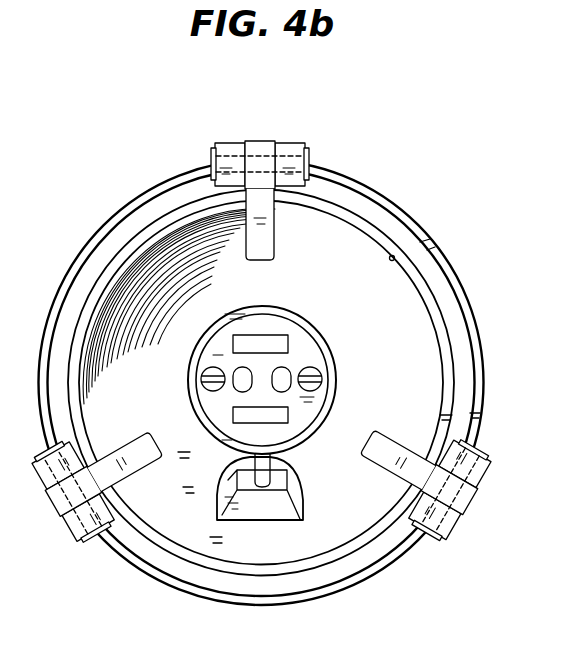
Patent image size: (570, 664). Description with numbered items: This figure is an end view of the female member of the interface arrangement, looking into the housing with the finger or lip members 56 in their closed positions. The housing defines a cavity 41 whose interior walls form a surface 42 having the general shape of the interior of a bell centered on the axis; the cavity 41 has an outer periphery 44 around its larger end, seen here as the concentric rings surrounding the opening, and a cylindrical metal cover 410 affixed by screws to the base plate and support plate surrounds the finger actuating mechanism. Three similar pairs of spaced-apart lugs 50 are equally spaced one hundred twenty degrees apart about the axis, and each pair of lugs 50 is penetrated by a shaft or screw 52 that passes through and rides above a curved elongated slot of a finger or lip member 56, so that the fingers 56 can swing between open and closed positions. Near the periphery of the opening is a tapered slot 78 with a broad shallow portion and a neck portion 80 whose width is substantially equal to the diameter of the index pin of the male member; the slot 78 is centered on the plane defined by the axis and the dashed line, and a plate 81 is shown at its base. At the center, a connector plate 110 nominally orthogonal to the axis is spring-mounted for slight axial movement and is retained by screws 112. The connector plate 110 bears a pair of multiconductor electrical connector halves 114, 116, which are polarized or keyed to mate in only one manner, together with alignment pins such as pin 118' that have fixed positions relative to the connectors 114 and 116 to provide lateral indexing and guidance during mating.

The cavity 41 is at (404, 334).
The surface 42 is at (400, 298).
The periphery 44 is at (395, 257).
The cylindrical metal cover 410 is at (396, 207).
The lugs 50 is at (226, 143).
The shaft or screw 52 is at (309, 160).
The finger or lip member 56 is at (261, 148).
The tapered slot 78 is at (242, 501).
The neck portion 80 is at (271, 466).
The bracket plate 81 is at (240, 478).
The connector plate 110 is at (275, 328).
The screws 112 is at (200, 379).
The connector half 114 is at (289, 346).
The connector half 116 is at (289, 414).
The alignment pin 118' is at (279, 338).